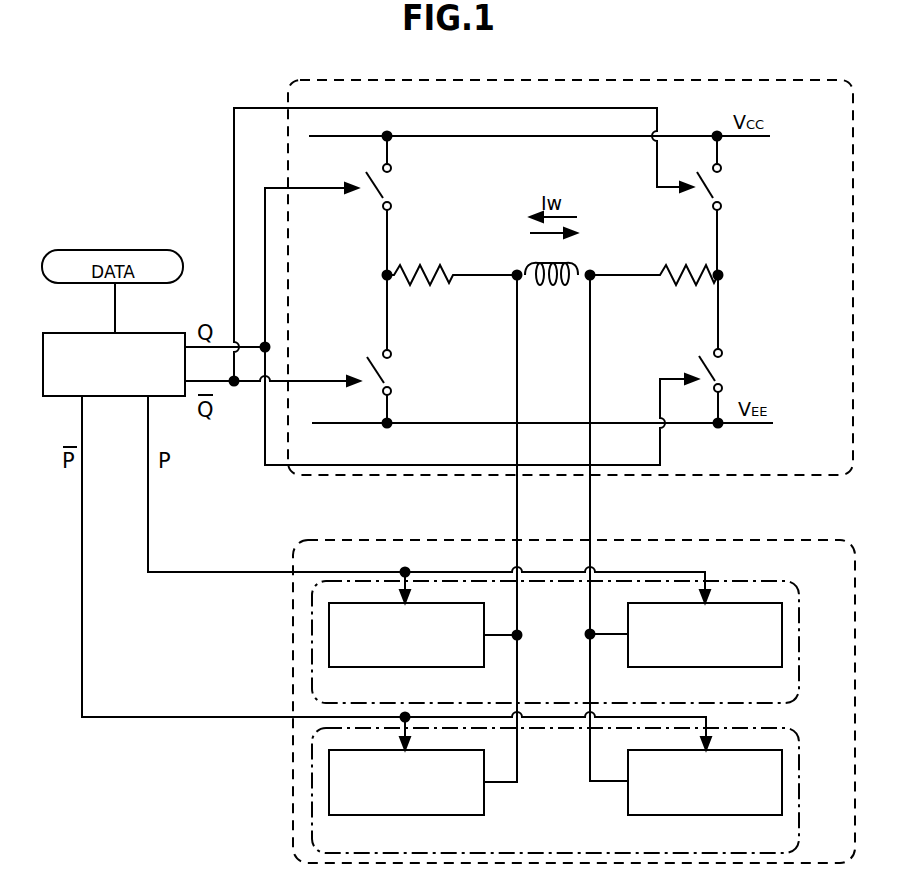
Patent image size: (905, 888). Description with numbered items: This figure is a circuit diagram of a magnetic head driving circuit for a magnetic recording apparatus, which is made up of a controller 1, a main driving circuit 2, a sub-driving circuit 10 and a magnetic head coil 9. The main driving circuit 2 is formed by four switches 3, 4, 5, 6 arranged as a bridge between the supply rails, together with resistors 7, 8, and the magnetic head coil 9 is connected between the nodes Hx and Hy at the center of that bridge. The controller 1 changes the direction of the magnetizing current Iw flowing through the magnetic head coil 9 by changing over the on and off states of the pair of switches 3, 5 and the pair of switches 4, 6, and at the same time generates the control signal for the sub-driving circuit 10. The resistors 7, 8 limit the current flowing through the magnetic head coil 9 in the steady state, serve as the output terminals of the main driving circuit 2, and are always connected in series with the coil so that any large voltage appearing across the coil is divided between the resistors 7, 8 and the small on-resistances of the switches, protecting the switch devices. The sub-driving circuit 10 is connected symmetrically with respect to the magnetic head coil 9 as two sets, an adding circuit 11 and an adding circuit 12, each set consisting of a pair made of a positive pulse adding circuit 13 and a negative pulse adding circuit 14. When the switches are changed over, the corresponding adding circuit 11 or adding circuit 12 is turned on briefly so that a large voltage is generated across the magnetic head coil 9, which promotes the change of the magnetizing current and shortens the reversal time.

The controller 1 is at (97, 330).
The main driving circuit 2 is at (782, 80).
The switch 3 is at (393, 193).
The switch 4 is at (392, 378).
The switch 5 is at (726, 193).
The switch 6 is at (727, 376).
The resistor 7 is at (420, 295).
The resistor 8 is at (677, 293).
The magnetic head coil 9 is at (553, 295).
The sub-driving circuit 10 is at (790, 540).
The adding circuit 11 is at (777, 580).
The adding circuit 12 is at (790, 728).
The positive pulse adding circuit 13 is at (377, 667).
The negative pulse adding circuit 14 is at (677, 667).